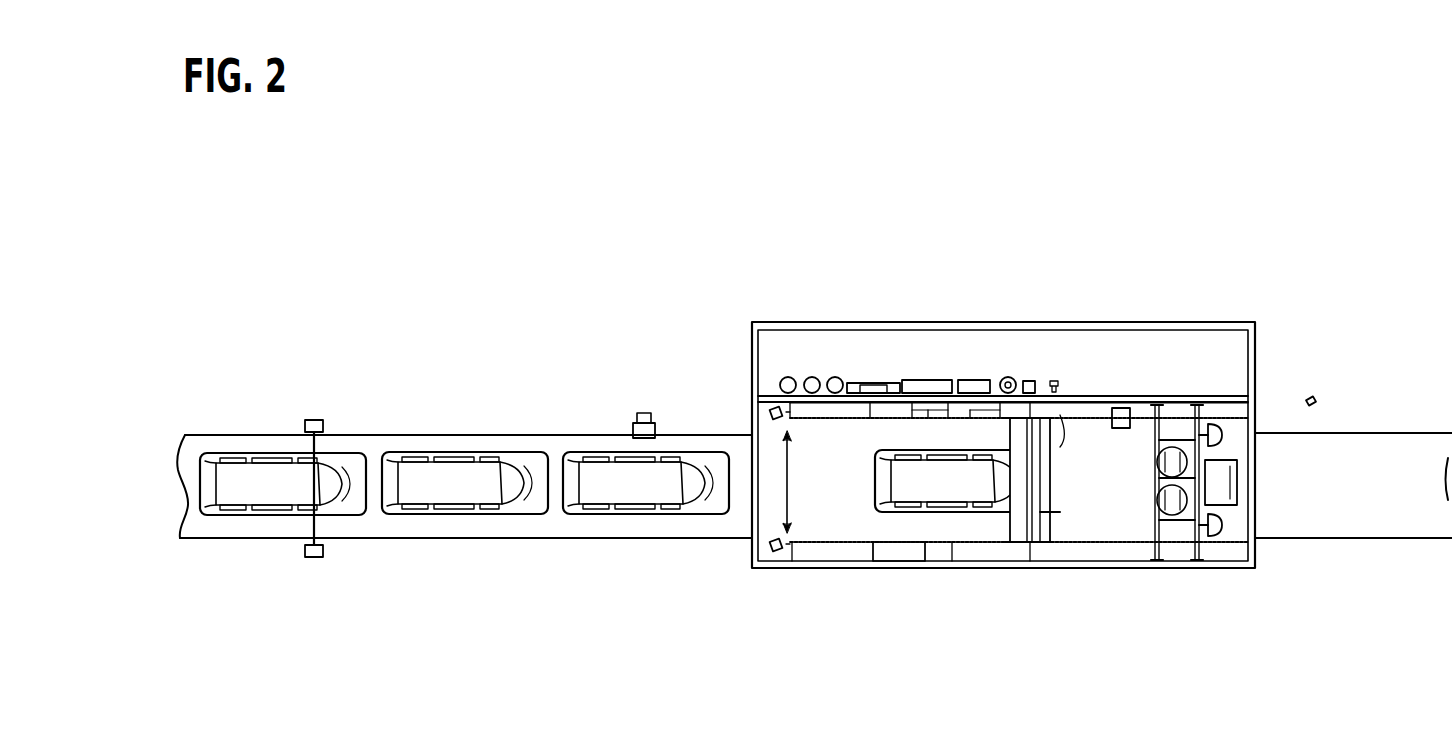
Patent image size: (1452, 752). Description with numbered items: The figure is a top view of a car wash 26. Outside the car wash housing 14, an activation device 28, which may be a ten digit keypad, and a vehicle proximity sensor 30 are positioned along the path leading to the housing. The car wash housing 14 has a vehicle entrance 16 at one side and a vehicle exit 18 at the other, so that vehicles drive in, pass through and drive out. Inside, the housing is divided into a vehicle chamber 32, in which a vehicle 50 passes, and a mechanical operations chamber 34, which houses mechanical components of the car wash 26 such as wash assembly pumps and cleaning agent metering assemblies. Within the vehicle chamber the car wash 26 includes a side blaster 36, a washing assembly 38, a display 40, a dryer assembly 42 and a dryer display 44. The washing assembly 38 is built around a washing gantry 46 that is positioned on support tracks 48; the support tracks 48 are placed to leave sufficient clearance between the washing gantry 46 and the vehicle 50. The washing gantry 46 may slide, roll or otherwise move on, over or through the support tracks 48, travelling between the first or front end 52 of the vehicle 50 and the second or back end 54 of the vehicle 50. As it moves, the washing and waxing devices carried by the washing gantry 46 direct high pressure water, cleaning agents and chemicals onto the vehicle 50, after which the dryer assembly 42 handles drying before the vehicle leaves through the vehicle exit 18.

The car wash housing 14 is at (857, 568).
The vehicle entrance 16 is at (752, 517).
The vehicle exit 18 is at (1255, 510).
The car wash 26 is at (560, 657).
The activation device 28 is at (655, 430).
The vehicle proximity sensor 30 is at (314, 420).
The vehicle chamber 32 is at (1083, 525).
The mechanical operations chamber 34 is at (782, 335).
The side blaster 36 is at (782, 408).
The washing assembly 38 is at (925, 548).
The display 40 is at (1125, 408).
The dryer assembly 42 is at (1215, 430).
The dryer display 44 is at (1316, 396).
The washing gantry 46 is at (1060, 437).
The support tracks 48 is at (912, 410).
The vehicle 50 is at (445, 467).
The first end of the vehicle 52 is at (1004, 500).
The second end of the vehicle 54 is at (870, 503).